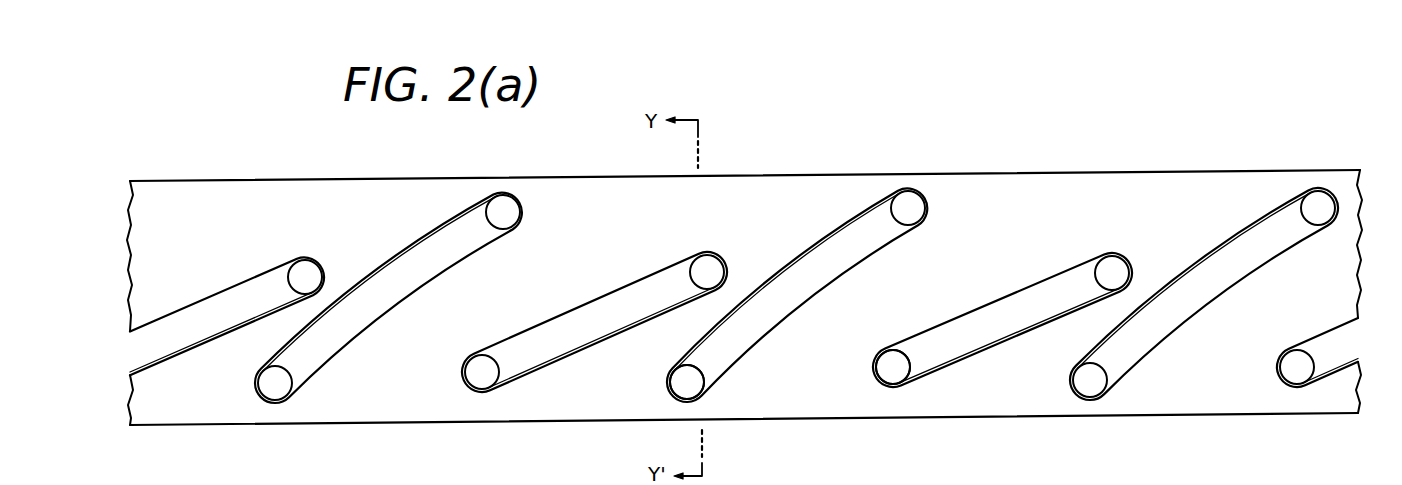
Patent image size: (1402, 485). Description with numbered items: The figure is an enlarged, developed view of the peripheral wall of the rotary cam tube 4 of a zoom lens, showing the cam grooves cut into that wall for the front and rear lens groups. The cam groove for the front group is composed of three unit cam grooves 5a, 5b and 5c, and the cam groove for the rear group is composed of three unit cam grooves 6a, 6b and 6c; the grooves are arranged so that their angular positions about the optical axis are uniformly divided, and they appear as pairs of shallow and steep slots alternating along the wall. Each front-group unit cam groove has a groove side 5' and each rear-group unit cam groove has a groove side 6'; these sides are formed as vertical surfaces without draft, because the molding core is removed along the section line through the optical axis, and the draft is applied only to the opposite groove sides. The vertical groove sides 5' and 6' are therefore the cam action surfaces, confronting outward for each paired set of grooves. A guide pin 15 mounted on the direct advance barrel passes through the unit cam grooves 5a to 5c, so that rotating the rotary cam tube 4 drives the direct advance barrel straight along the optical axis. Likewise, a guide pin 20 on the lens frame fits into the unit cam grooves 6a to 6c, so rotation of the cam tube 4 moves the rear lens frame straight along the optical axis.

The rotary cam tube 4 is at (407, 403).
The unit cam groove 5a is at (632, 283).
The unit cam groove 5b is at (1027, 285).
The unit cam groove 5c is at (235, 280).
The groove side 5' is at (624, 299).
The unit cam groove 6a is at (432, 220).
The unit cam groove 6b is at (843, 212).
The unit cam groove 6c is at (1243, 220).
The groove side 6' is at (786, 254).
The guide pin 15 is at (889, 373).
The guide pin 20 is at (676, 387).